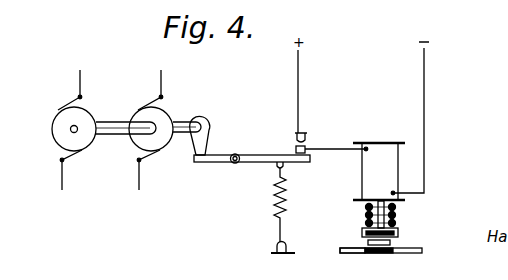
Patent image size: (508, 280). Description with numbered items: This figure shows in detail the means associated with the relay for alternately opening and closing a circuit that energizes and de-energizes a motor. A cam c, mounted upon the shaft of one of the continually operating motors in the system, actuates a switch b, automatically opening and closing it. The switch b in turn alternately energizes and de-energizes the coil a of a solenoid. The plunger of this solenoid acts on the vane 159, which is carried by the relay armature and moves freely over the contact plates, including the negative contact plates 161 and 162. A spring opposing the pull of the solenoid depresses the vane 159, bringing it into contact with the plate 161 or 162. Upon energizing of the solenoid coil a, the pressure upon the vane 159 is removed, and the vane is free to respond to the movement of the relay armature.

The cam c is at (208, 141).
The switch b is at (268, 155).
The coil a is at (379, 171).
The vane 159 is at (398, 240).
The negative contact plate 161 is at (417, 252).
The negative contact plate 162 is at (353, 253).